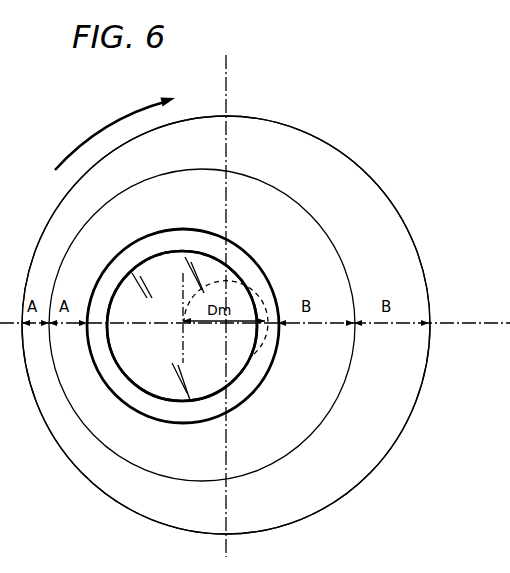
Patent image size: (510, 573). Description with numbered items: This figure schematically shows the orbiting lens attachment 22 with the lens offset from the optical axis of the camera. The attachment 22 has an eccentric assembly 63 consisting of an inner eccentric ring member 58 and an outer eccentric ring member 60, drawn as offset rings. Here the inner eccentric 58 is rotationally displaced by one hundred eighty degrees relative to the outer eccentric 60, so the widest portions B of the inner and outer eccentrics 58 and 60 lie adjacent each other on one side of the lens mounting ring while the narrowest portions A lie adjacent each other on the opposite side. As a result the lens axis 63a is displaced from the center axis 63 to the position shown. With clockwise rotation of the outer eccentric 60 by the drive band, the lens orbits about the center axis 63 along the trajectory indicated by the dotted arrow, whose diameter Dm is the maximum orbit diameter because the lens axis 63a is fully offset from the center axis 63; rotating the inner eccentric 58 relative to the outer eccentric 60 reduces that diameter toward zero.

The orbiting lens attachment 22 is at (347, 117).
The inner eccentric ring member 58 is at (297, 250).
The outer eccentric ring member 60 is at (392, 269).
The center axis 63 is at (206, 364).
The lens axis 63a is at (181, 328).